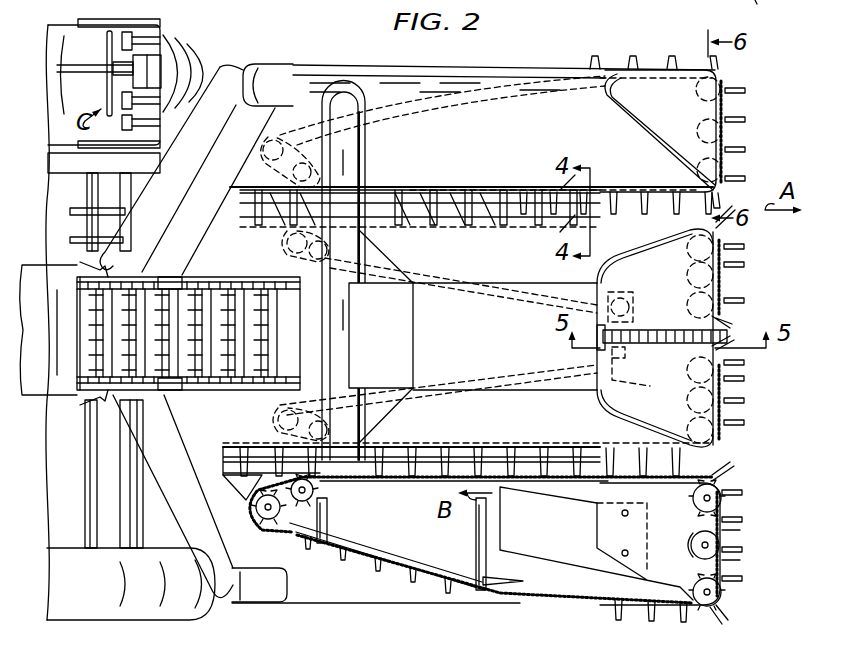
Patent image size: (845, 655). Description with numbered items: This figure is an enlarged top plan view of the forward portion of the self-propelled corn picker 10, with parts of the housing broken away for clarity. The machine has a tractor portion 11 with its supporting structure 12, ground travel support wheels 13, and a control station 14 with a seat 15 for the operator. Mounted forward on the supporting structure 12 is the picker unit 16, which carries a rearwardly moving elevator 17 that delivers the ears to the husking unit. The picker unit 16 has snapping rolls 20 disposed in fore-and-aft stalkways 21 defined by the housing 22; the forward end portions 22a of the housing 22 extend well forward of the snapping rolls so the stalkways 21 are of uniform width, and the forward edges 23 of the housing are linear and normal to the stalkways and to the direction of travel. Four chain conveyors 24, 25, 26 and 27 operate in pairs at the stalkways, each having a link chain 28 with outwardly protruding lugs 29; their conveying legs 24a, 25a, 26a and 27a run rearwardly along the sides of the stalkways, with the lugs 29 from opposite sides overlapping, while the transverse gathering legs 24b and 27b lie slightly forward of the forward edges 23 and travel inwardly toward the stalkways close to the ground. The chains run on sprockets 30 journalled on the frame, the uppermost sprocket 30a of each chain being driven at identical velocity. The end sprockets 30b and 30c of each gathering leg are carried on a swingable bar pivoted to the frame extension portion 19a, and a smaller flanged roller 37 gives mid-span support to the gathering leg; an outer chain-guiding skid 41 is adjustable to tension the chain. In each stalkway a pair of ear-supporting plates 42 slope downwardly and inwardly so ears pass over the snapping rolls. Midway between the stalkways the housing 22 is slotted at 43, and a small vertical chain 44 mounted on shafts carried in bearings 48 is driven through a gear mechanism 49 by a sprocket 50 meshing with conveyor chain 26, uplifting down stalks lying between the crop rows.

The self-propelled corn picker 10 is at (250, 58).
The tractor portion 11 is at (162, 25).
The supporting structure 12 is at (95, 472).
The ground travel support wheels 13 is at (187, 52).
The control station 14 is at (67, 22).
The seat 15 is at (57, 66).
The picker unit 16 is at (400, 60).
The elevator 17 is at (287, 344).
The extension portion 19a is at (683, 539).
The snapping rolls 20 is at (428, 200).
The stalkways 21 is at (498, 190).
The housing 22 is at (468, 78).
The forward end portions 22a is at (694, 137).
The forward edges 23 is at (725, 160).
The conveyor 24 is at (508, 492).
The conveying leg 24a is at (425, 482).
The gathering leg 24b is at (725, 561).
The conveyor 25 is at (542, 372).
The conveying leg 25a is at (468, 457).
The conveyor 26 is at (518, 311).
The conveying leg 26a is at (461, 271).
The conveyor 27 is at (528, 74).
The conveying leg 27a is at (562, 190).
The gathering leg 27b is at (728, 102).
The link chain 28 is at (597, 603).
The lugs 29 is at (672, 57).
The sprockets 30 is at (312, 490).
The uppermost chain-mounting sprocket 30a is at (284, 150).
The sprocket 30b is at (700, 90).
The sprocket 30c is at (705, 178).
The flanged roller 37 is at (725, 132).
The outer chain-guiding skid 41 is at (400, 549).
The ear-supporting plates 42 is at (610, 218).
The slot 43 is at (648, 331).
The small chain 44 is at (658, 346).
The bearings 48 is at (631, 370).
The gear mechanism 49 is at (642, 303).
The sprocket 50 is at (632, 291).